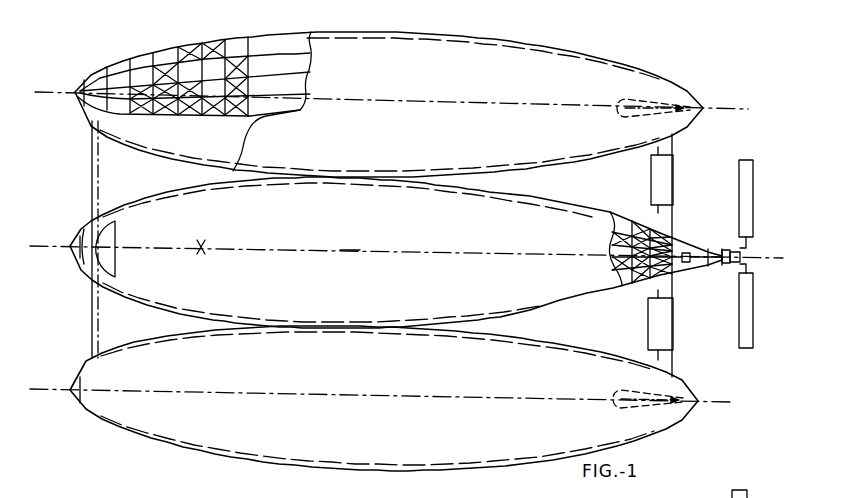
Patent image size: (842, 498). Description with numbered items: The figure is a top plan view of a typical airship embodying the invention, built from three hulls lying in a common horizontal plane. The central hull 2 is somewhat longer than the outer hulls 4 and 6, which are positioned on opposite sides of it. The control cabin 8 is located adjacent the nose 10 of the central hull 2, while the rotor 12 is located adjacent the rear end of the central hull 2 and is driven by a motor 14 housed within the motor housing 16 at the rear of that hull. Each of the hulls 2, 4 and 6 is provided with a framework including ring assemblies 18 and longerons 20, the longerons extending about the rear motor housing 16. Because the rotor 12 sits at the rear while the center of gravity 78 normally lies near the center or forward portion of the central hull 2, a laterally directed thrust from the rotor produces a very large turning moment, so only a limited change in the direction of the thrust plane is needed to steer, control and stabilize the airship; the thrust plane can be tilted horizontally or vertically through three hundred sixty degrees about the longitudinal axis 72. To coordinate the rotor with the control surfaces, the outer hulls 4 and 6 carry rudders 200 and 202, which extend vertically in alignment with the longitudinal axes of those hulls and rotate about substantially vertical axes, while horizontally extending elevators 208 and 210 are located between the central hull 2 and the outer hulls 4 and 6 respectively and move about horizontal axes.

The central hull 2 is at (130, 273).
The outer hull 4 is at (98, 113).
The outer hull 6 is at (98, 410).
The control cabin 8 is at (107, 255).
The nose 10 is at (95, 228).
The rotor 12 is at (745, 292).
The motor 14 is at (688, 252).
The motor housing 16 is at (697, 272).
The ring assemblies 18 is at (120, 66).
The longerons 20 is at (160, 62).
The longitudinal axis 72 is at (350, 248).
The center of gravity 78 is at (207, 242).
The rudder 200 is at (637, 98).
The rudder 202 is at (640, 405).
The elevator 208 is at (668, 170).
The elevator 210 is at (667, 335).